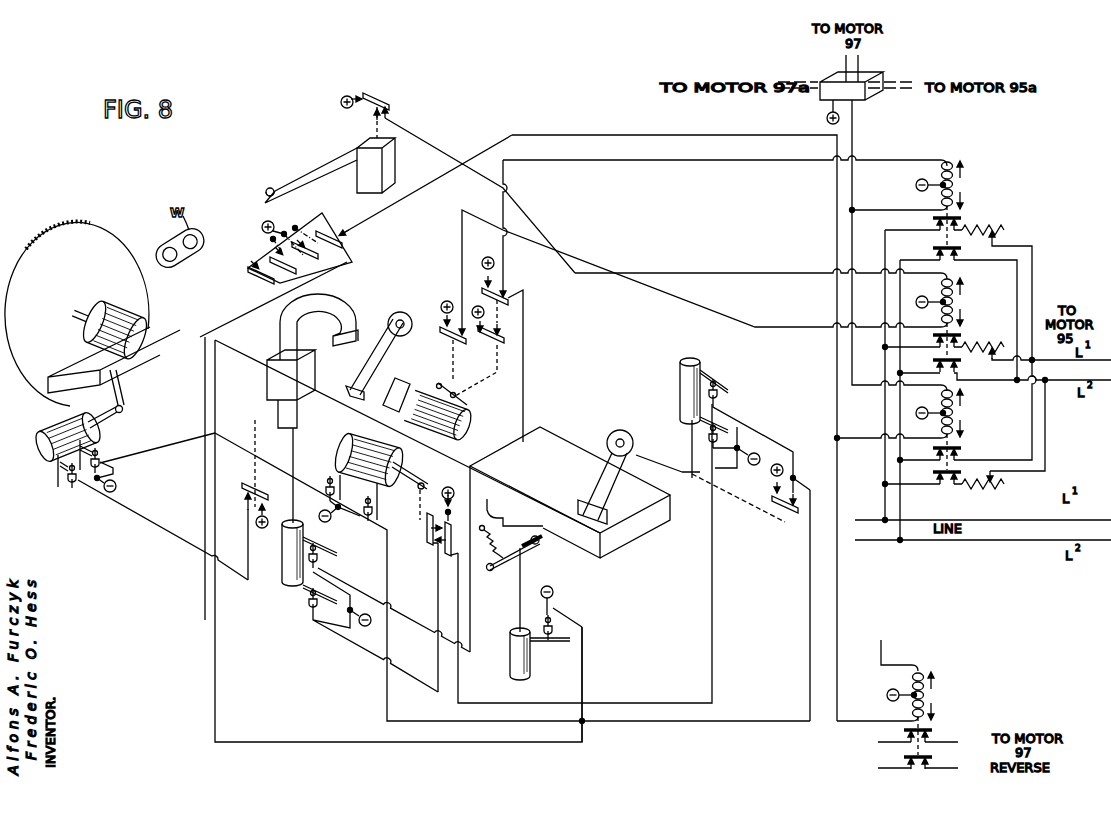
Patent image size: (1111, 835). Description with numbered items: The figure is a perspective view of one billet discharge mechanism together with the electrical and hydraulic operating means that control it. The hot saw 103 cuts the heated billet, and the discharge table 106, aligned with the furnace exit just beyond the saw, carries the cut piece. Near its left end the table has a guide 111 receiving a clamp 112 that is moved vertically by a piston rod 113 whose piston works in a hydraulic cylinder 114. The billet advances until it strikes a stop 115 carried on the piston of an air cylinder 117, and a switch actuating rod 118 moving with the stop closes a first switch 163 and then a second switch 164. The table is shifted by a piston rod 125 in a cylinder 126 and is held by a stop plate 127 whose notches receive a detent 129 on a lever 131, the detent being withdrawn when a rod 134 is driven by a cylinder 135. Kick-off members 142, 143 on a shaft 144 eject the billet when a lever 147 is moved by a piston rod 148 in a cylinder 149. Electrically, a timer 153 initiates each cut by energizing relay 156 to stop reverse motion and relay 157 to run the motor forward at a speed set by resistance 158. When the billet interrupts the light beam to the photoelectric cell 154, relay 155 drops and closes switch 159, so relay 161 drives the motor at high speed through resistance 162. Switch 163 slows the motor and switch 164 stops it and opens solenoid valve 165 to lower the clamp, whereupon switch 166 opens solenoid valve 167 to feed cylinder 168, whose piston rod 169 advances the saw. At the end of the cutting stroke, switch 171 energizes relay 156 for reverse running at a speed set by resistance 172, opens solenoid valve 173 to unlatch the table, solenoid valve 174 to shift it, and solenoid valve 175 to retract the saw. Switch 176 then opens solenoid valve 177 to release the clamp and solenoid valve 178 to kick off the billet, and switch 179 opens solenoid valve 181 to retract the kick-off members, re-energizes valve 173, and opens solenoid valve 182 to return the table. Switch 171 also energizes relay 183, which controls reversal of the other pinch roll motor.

The hot saw 103 is at (60, 256).
The discharge table 106 is at (542, 438).
The guide 111 is at (278, 375).
The clamp 112 is at (284, 327).
The piston rod 113 is at (292, 454).
The hydraulic cylinder 114 is at (284, 554).
The stop 115 is at (405, 385).
The air cylinder 117 is at (462, 420).
The switch actuating rod 118 is at (466, 406).
The piston rod 125 is at (404, 482).
The cylinder 126 is at (344, 437).
The stop plate 127 is at (516, 515).
The detent 129 is at (540, 546).
The lever 131 is at (502, 573).
The rod 134 is at (522, 574).
The cylinder 135 is at (510, 645).
The kick-off member 142 is at (397, 308).
The kick-off member 143 is at (622, 411).
The shaft 144 is at (637, 455).
The lever 147 is at (688, 478).
The piston rod 148 is at (690, 459).
The cylinder 149 is at (680, 375).
The timer 153 is at (836, 76).
The photoelectric cell 154 is at (268, 189).
The relay 155 is at (385, 162).
The relay 156 is at (952, 411).
The relay 157 is at (952, 184).
The resistance 158 is at (994, 229).
The switch 159 is at (382, 94).
The relay 161 is at (952, 301).
The resistance 162 is at (994, 346).
The first switch 163 is at (444, 331).
The second switch 164 is at (508, 289).
The solenoid valve 165 is at (326, 563).
The switch 166 is at (251, 485).
The solenoid valve 167 is at (70, 484).
The cylinder 168 is at (62, 430).
The piston rod 169 is at (110, 412).
The switch 171 is at (264, 252).
The resistance 172 is at (991, 489).
The solenoid valve 173 is at (560, 623).
The solenoid valve 174 is at (330, 482).
The solenoid valve 175 is at (100, 460).
The switch 176 is at (428, 546).
The solenoid valve 177 is at (308, 604).
The solenoid valve 178 is at (707, 429).
The switch 179 is at (797, 511).
The solenoid valve 181 is at (722, 399).
The solenoid valve 182 is at (376, 514).
The relay 183 is at (922, 695).